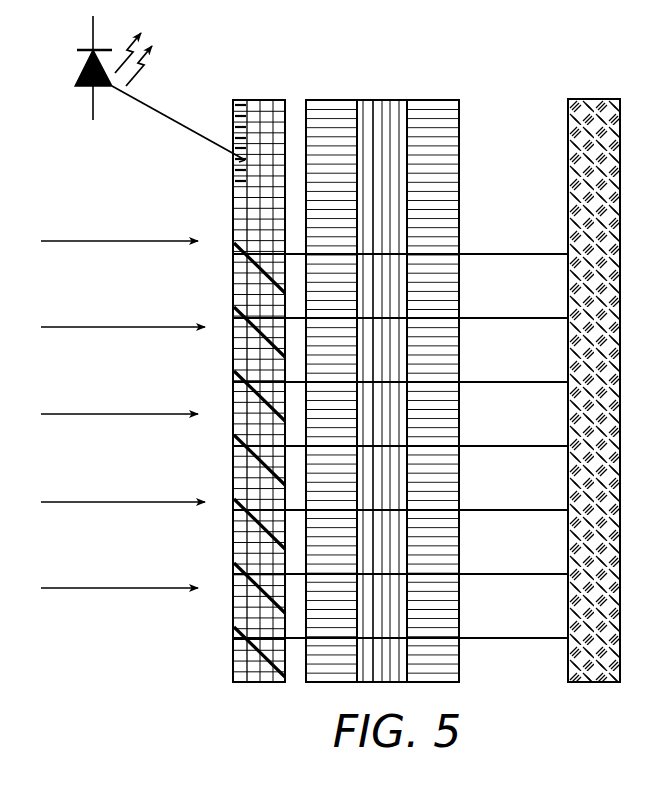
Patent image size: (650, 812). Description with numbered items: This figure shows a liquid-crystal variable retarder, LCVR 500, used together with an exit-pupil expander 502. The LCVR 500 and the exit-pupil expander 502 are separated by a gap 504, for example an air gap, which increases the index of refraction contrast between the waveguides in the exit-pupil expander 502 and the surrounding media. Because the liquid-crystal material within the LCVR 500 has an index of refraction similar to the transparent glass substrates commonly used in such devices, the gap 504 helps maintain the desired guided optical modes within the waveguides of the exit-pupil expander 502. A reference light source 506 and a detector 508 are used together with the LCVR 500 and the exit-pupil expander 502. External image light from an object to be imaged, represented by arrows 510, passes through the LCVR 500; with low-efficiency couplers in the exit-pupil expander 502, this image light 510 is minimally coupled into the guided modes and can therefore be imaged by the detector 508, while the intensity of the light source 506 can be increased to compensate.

The LCVR 500 is at (383, 99).
The exit-pupil expander 502 is at (253, 99).
The gap 504 is at (297, 117).
The reference light source 506 is at (78, 62).
The detector 508 is at (588, 98).
The arrows 510 is at (95, 225).